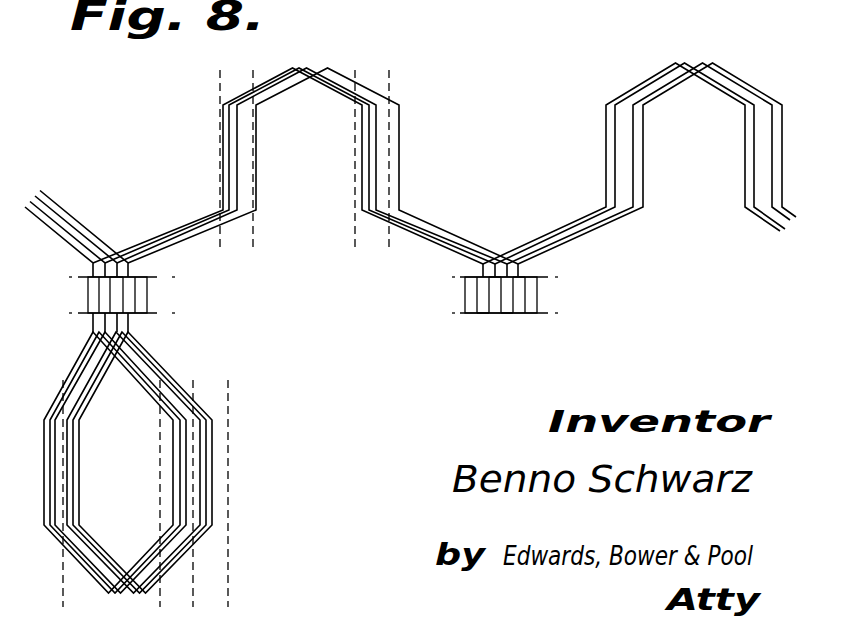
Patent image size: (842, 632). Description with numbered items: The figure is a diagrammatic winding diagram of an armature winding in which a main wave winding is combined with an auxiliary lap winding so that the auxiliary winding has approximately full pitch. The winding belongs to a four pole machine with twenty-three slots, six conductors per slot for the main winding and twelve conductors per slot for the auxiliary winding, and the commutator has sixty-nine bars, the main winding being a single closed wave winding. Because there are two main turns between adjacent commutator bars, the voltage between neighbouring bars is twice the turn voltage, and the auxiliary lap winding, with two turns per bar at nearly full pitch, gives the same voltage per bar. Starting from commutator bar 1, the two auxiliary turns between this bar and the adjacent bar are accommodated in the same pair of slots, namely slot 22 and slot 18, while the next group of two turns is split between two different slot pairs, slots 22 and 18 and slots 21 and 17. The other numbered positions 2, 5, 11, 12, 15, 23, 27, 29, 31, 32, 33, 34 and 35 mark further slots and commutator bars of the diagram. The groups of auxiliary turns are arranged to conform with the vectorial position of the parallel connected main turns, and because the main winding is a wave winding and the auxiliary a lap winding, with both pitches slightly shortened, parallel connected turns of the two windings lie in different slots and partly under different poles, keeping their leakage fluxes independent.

The commutator bar 1 is at (305, 169).
The terminal of winding block 2 is at (122, 295).
The boundary of coil section 5 is at (400, 147).
The second coil section winding 11 is at (634, 153).
The second coil section winding 12 is at (651, 153).
The end leads of second coil section 15 is at (763, 96).
The armature slot 17 is at (113, 462).
The armature slot 18 is at (139, 471).
The armature slot 21 is at (176, 495).
The armature slot 22 is at (217, 495).
The boundary / terminal of first coil section 23 is at (171, 169).
The lead terminal 27 is at (76, 251).
The lead terminal 29 is at (117, 293).
The terminal of right connecting block 31 is at (505, 288).
The terminal of right connecting block 32 is at (483, 306).
The terminal of right connecting block 33 is at (495, 285).
The terminal of right connecting block 34 is at (508, 306).
The terminal of right connecting block 35 is at (519, 285).